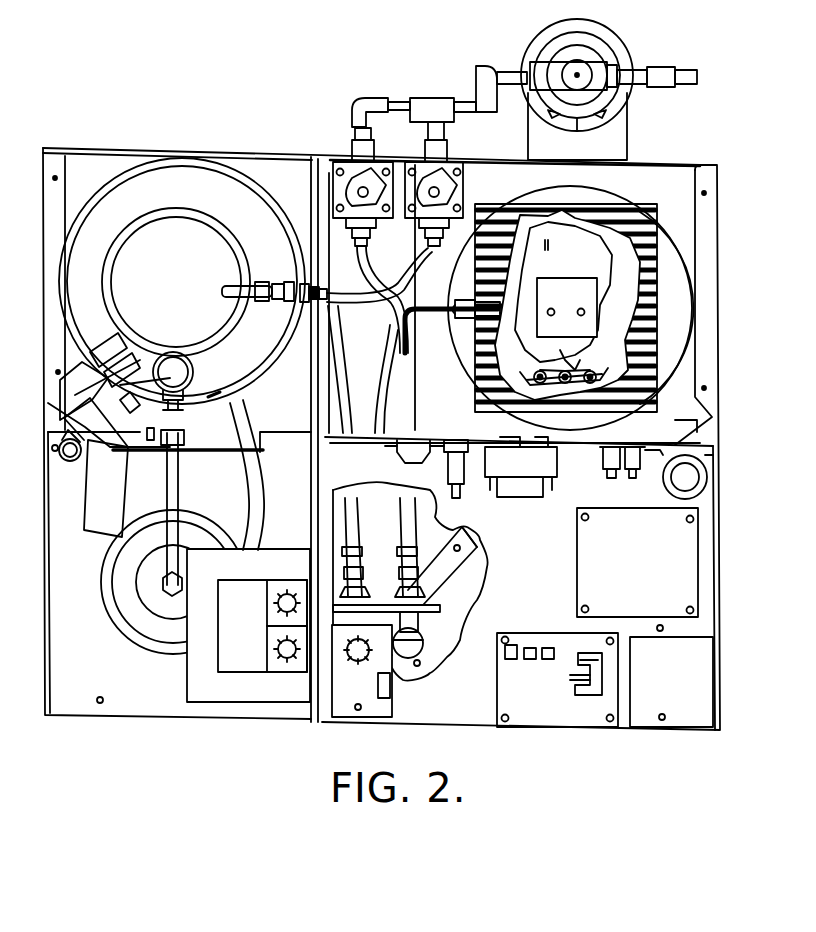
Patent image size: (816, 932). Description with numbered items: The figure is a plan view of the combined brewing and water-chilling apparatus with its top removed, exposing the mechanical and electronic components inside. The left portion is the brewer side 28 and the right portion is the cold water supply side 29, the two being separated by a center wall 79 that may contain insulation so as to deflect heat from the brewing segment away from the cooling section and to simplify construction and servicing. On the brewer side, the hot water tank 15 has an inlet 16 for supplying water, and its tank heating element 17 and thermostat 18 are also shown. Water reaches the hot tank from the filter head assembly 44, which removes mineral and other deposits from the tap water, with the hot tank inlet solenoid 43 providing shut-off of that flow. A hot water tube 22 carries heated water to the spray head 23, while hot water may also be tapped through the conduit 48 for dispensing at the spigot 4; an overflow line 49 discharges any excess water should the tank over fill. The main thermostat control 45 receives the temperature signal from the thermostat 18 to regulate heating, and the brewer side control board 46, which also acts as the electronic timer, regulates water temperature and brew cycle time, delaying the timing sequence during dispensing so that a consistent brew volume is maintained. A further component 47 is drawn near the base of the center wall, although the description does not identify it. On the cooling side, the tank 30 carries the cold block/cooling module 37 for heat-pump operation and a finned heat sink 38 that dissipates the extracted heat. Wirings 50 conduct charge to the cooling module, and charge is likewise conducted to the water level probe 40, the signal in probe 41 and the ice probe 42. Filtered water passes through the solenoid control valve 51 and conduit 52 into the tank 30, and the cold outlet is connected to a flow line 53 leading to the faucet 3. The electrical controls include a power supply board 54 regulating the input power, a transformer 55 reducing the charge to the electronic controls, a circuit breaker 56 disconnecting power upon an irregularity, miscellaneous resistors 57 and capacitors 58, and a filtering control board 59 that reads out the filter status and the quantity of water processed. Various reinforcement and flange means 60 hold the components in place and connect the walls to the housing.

The faucet 3 is at (421, 640).
The spigot 4 is at (362, 590).
The hot water tank 15 is at (279, 182).
The inlet 16 is at (309, 285).
The tank heating element 17 is at (142, 229).
The thermostat 18 is at (100, 385).
The hot water tube 22 is at (172, 481).
The spray head 23 is at (150, 590).
The brewer side 28 is at (192, 132).
The cold water supply side 29 is at (701, 163).
The tank 30 is at (641, 258).
The cold block/cooling module 37 is at (587, 286).
The heat sink 38 is at (621, 205).
The water level probe 40 is at (541, 375).
The signal in probe 41 is at (595, 379).
The ice probe 42 is at (581, 386).
The hot tank inlet solenoid 43 is at (455, 166).
The filter head assembly 44 is at (626, 55).
The main thermostat control 45 is at (106, 515).
The brewer side control board 46 is at (187, 665).
The switch box 47 is at (340, 700).
The conduit 48 is at (334, 320).
The overflow line 49 is at (254, 492).
The wirings 50 is at (412, 330).
The solenoid control valve 51 is at (347, 165).
The conduit 52 is at (370, 259).
The flow line 53 is at (380, 404).
The power supply board 54 is at (680, 575).
The transformer 55 is at (553, 478).
The circuit breaker 56 is at (465, 500).
The resistors 57 is at (647, 473).
The capacitors 58 is at (708, 474).
The filtering control board 59 is at (506, 688).
The flange means 60 is at (57, 177).
The center wall 79 is at (330, 484).